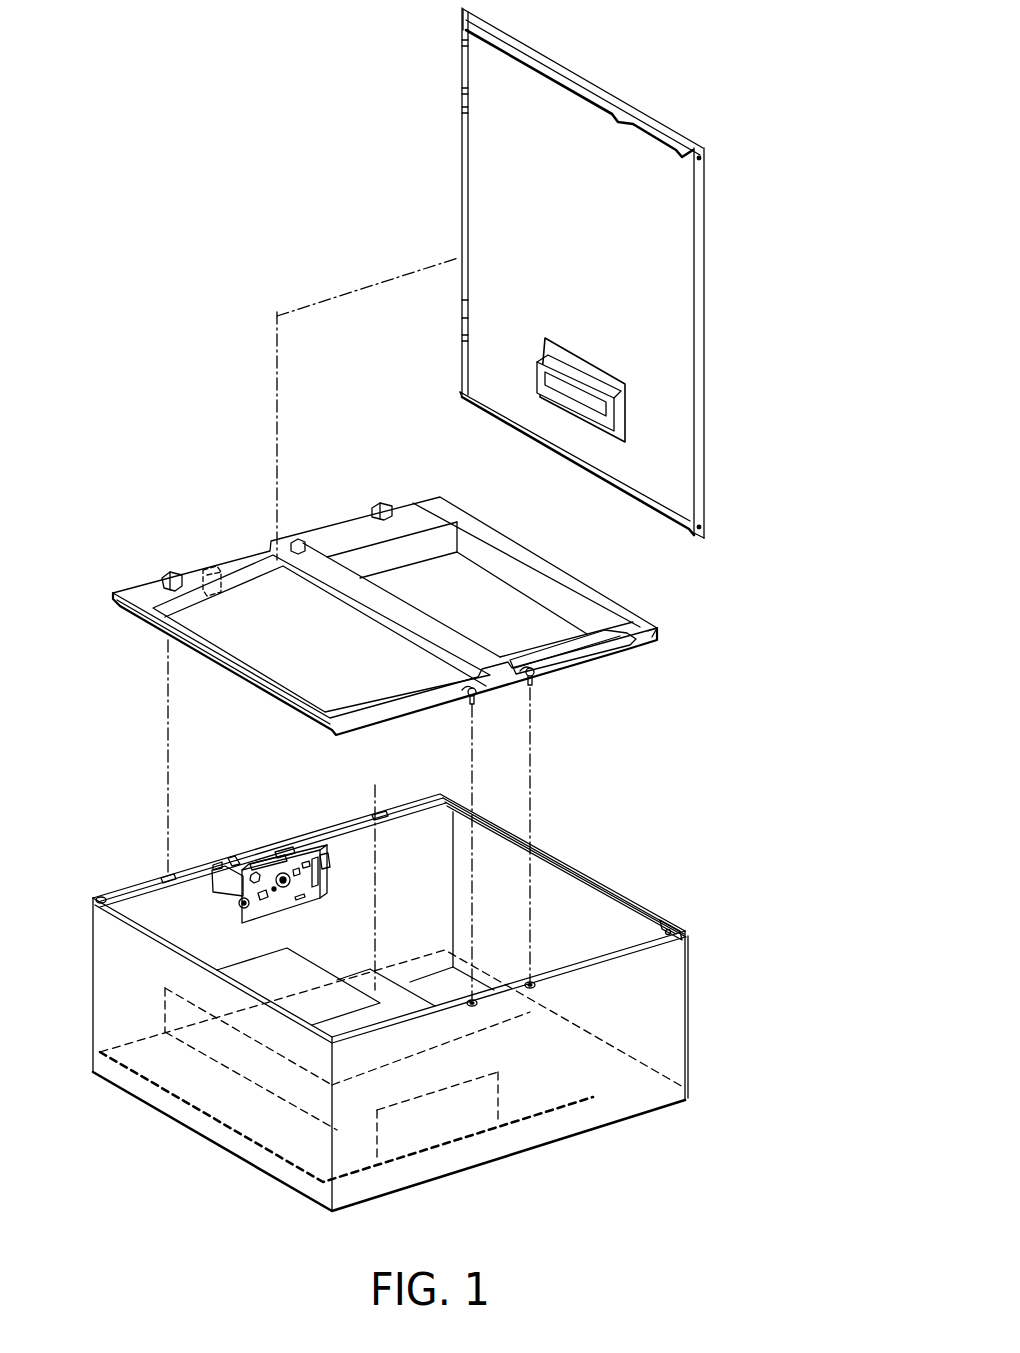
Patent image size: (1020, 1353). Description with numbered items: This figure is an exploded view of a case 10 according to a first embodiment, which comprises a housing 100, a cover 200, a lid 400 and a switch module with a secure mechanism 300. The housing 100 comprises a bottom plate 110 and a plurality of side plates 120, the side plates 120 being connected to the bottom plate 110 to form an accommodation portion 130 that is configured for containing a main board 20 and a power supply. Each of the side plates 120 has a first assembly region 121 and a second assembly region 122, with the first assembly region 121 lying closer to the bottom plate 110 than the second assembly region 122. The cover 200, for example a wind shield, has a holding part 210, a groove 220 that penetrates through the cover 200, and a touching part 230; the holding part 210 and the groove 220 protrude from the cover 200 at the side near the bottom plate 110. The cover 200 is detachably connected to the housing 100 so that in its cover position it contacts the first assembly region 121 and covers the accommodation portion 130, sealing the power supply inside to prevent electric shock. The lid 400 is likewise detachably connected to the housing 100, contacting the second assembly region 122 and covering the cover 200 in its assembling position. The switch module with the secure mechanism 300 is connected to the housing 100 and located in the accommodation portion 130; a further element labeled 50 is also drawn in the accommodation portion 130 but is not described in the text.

The case 10 is at (184, 115).
The lid 400 is at (724, 214).
The cover 200 is at (138, 637).
The holding part 210 is at (200, 576).
The groove 220 is at (232, 560).
The touching part 230 is at (298, 542).
The housing 100 is at (675, 856).
The accommodation portion 130 is at (182, 927).
The second assembly region 122 is at (334, 822).
The side plate 120 is at (583, 938).
The first assembly region 121 is at (172, 872).
The bottom plate 110 is at (460, 988).
The plate 50 is at (300, 980).
The main board 20 is at (388, 990).
The switch module with secure mechanism 300 is at (341, 878).